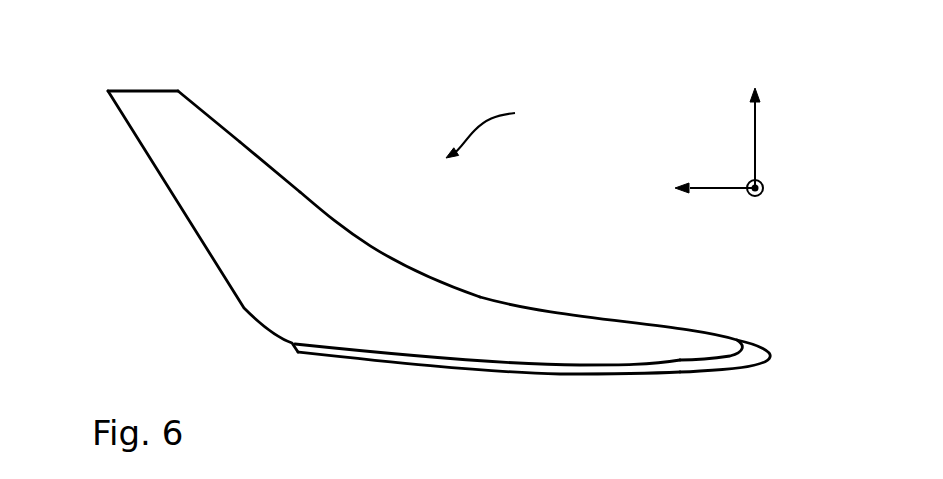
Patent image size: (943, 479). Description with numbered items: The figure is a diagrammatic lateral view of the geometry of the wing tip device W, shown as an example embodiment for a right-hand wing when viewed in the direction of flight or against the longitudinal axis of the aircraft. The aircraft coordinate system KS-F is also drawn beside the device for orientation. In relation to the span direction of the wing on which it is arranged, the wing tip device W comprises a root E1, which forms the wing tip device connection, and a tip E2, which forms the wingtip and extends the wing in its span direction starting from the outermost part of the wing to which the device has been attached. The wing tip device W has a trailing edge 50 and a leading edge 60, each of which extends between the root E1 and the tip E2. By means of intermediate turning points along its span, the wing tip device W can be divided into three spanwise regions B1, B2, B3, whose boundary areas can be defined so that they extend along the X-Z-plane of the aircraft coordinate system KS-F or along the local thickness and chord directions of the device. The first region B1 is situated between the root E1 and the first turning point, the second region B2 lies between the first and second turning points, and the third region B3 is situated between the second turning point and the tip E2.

The trailing edge 50 is at (182, 226).
The leading edge 60 is at (302, 192).
The first region B1 is at (536, 313).
The second region B2 is at (340, 268).
The third region B3 is at (207, 125).
The root E1 is at (510, 360).
The tip E2 is at (125, 91).
The wing tip device W is at (503, 125).
The aircraft coordinate system KS-F is at (700, 168).